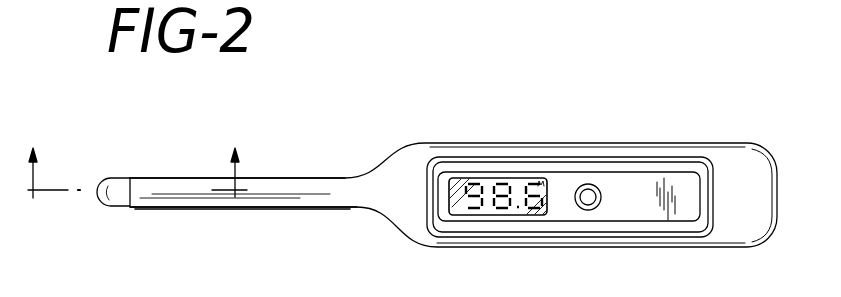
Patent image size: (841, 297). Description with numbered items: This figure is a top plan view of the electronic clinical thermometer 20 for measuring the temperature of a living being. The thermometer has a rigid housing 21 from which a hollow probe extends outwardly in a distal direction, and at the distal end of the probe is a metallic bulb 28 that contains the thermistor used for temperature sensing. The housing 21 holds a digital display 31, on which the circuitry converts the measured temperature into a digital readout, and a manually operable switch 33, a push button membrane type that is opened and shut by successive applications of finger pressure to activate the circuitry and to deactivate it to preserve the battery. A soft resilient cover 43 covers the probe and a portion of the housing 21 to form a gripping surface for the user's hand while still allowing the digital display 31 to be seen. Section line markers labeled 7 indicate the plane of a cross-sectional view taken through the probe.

The section line 7- 7 is at (137, 160).
The electronic clinical thermometer 20 is at (437, 160).
The rigid housing 21 is at (627, 226).
The metallic bulb 28 is at (107, 208).
The digital display 31 is at (470, 178).
The manually operable switch 33 is at (592, 186).
The soft resilient cover 43 is at (383, 205).